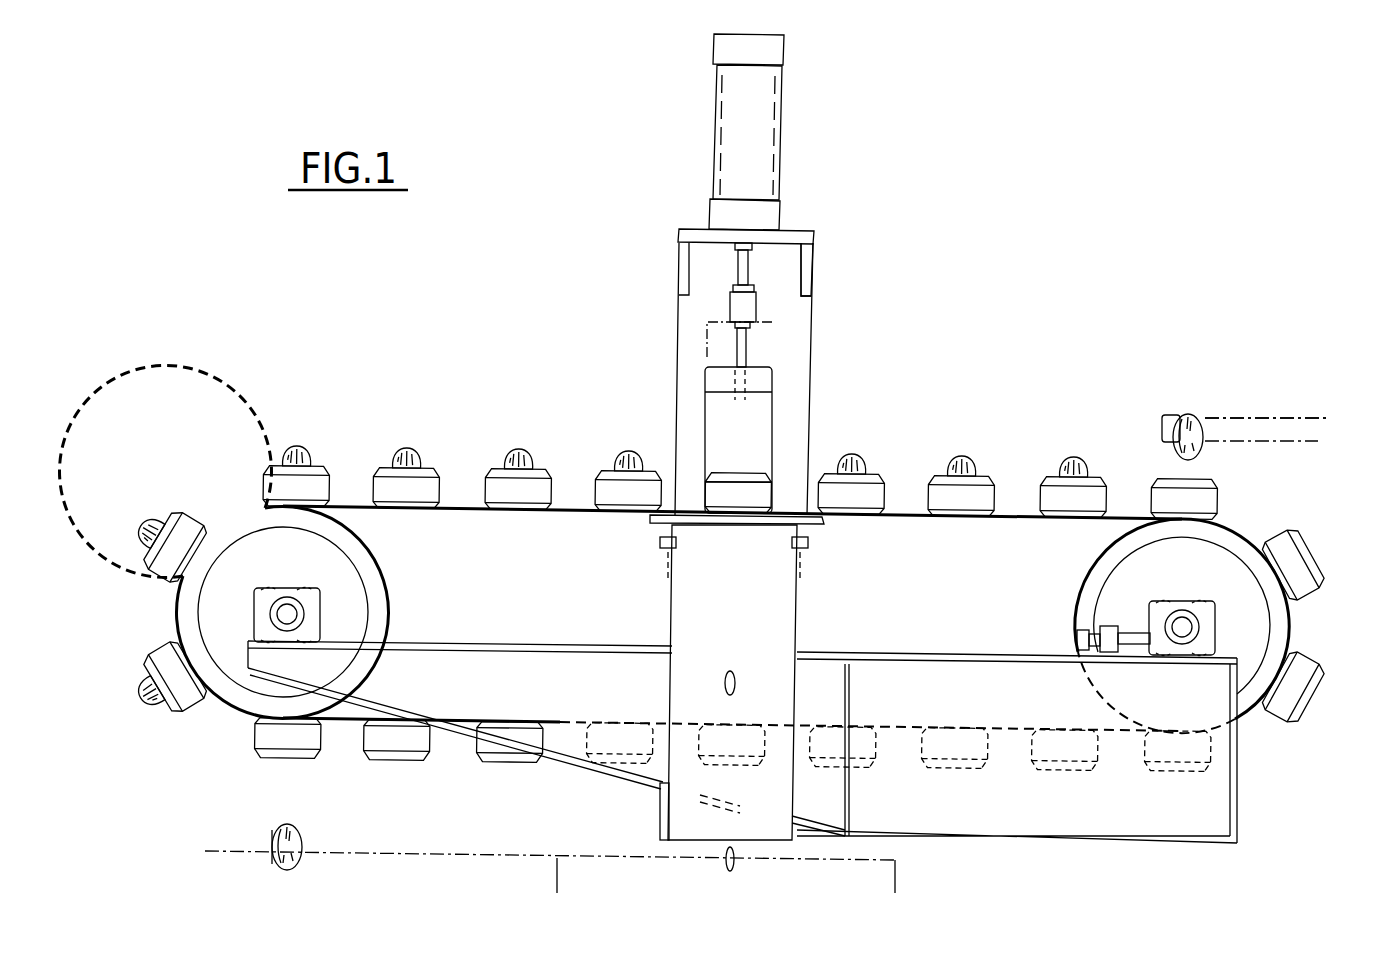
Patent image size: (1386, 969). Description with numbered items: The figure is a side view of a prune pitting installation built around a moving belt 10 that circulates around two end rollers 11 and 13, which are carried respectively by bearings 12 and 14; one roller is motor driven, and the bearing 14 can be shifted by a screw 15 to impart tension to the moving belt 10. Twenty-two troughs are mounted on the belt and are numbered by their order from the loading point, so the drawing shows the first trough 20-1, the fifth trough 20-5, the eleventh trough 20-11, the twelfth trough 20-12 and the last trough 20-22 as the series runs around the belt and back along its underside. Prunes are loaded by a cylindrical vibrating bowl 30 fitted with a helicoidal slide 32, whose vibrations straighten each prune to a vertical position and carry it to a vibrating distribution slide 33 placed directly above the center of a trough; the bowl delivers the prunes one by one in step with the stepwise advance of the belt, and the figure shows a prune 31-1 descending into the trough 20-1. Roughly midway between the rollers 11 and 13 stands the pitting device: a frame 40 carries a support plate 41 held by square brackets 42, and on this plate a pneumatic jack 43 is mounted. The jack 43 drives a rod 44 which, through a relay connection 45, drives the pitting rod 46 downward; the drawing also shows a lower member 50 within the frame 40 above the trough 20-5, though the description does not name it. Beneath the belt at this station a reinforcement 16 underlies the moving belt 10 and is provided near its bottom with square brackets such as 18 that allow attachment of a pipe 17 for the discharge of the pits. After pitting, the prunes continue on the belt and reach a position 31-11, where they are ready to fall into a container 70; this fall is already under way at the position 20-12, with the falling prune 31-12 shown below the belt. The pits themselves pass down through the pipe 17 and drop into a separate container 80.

The moving belt 10 is at (451, 503).
The end roller 11 is at (250, 553).
The bearing 12 is at (300, 600).
The end roller 13 is at (1240, 700).
The bearing 14 is at (1168, 605).
The screw 15 is at (1075, 638).
The reinforcement 16 is at (663, 531).
The pipe 17 is at (755, 629).
The square bracket 18 is at (810, 532).
The trough 20-1 is at (1210, 500).
The trough 20-5 is at (705, 497).
The trough 20-11 is at (165, 657).
The trough 20-12 is at (262, 737).
The trough 20-22 is at (1320, 590).
The vibrating bowl 30 is at (1280, 430).
The prune 31-1 is at (1183, 418).
The prune position 31-11 is at (158, 700).
The prune 31-12 is at (305, 836).
The helicoidal slide 32 is at (1222, 417).
The vibrating distribution slide 33 is at (1166, 440).
The frame 40 is at (810, 338).
The support plate 41 is at (790, 230).
The square bracket 42 is at (815, 268).
The jack 43 is at (783, 110).
The rod 44 is at (740, 262).
The relay connection 45 is at (735, 305).
The pitting rod 46 is at (740, 352).
The press head 50 is at (762, 422).
The container 70 is at (478, 858).
The container 80 is at (637, 835).